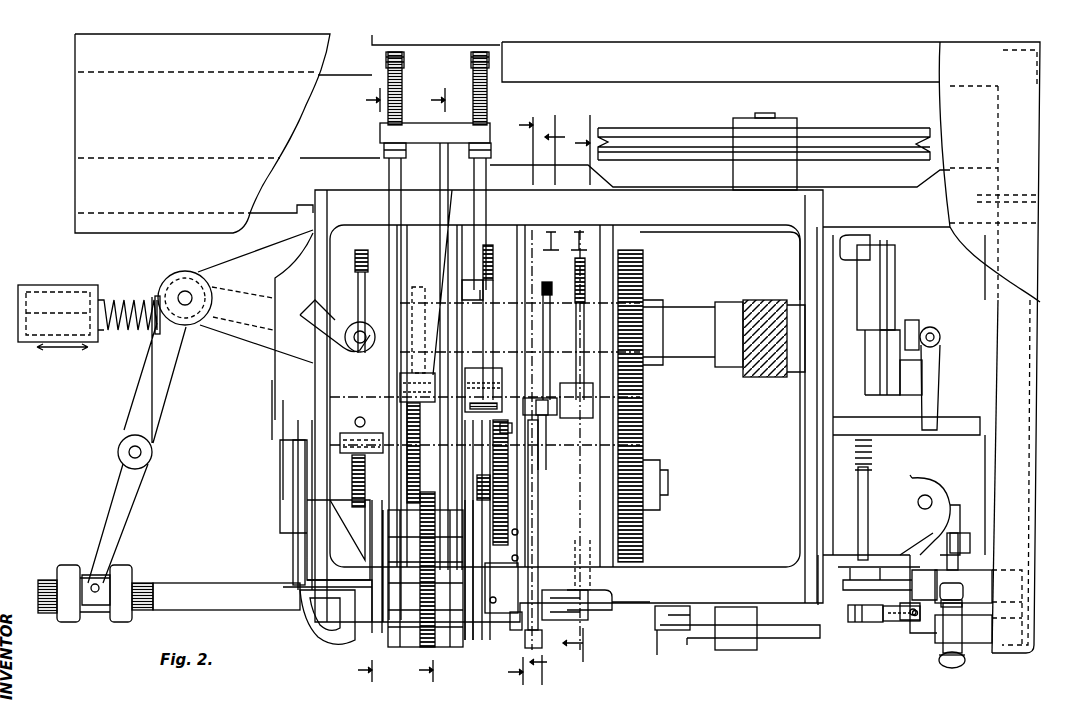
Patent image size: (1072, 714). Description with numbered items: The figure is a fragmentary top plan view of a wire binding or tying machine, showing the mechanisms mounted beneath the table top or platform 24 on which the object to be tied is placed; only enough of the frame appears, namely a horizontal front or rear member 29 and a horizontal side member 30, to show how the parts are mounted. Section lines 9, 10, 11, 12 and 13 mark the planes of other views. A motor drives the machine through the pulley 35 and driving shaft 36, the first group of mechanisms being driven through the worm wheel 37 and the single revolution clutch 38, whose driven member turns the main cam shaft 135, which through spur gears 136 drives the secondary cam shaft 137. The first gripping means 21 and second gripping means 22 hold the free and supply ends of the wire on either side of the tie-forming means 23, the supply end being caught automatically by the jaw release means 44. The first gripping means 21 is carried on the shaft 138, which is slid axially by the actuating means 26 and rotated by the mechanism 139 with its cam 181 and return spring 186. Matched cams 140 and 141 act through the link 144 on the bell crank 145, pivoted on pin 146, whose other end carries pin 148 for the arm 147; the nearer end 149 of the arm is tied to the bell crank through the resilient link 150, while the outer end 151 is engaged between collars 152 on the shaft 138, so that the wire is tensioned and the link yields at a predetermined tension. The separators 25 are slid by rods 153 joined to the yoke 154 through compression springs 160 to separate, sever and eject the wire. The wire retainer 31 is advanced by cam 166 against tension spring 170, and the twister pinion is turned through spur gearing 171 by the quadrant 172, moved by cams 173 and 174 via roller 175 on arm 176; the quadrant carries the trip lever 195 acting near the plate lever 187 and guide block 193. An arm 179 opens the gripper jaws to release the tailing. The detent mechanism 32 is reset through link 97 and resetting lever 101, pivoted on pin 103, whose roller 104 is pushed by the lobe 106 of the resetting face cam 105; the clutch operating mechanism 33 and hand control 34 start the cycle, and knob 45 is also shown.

The section line 9 is at (359, 385).
The section line 10 is at (421, 385).
The section line 11 is at (510, 400).
The section line 12 is at (549, 395).
The section line 13 is at (583, 392).
The first gripping means 21 is at (303, 633).
The second gripping means 22 is at (733, 652).
The tie-forming means 23 is at (450, 648).
The table top or platform 24 is at (191, 117).
The separators 25 is at (376, 627).
The actuating means 26 is at (119, 398).
The horizontal front and rear member 29 is at (676, 50).
The horizontal side member 30 is at (1038, 312).
The wire retainer 31 is at (525, 640).
The detent mechanism 32 is at (860, 624).
The clutch operating mechanism 33 is at (868, 490).
The hand control 34 is at (933, 615).
The pulley 35 is at (870, 130).
The driving shaft 36 is at (740, 255).
The worm wheel 37 is at (745, 380).
The single revolution clutch 38 is at (892, 279).
The jaw release means 44 is at (672, 640).
The knob 45 is at (960, 655).
The link 97 is at (885, 624).
The resetting lever 101 is at (940, 364).
The pivot pin 103 is at (935, 495).
The roller 104 is at (938, 330).
The resetting face cam 105 is at (918, 322).
The lobe 106 is at (908, 370).
The main cam shaft 135 is at (676, 306).
The spur gears 136 is at (645, 390).
The secondary cam shaft 137 is at (420, 440).
The shaft 138 is at (218, 583).
The mechanism 139 is at (585, 610).
The cam 140 is at (355, 259).
The cam 141 is at (352, 476).
The link 144 is at (355, 403).
The bell crank 145 is at (290, 310).
The pin 146 is at (183, 294).
The arm 147 is at (132, 505).
The pin 148 is at (128, 451).
The nearer end of arm 149 is at (152, 298).
The resilient link 150 is at (108, 295).
The outer end of arm 151 is at (98, 600).
The collars 152 is at (92, 578).
The rods 153 is at (486, 180).
The yoke 154 is at (400, 152).
The compression springs 160 is at (473, 80).
The cam 166 is at (542, 290).
The tension spring 170 is at (540, 255).
The spur gearing 171 is at (420, 570).
The quadrant 172 is at (496, 380).
The cam 173 is at (493, 273).
The cam 174 is at (478, 450).
The roller 175 is at (490, 363).
The arm 176 is at (480, 368).
The arm 179 is at (293, 529).
The cam 181 is at (575, 273).
The return spring 186 is at (575, 252).
The plate lever 187 is at (516, 628).
The guide block 193 is at (512, 586).
The trip lever 195 is at (520, 435).